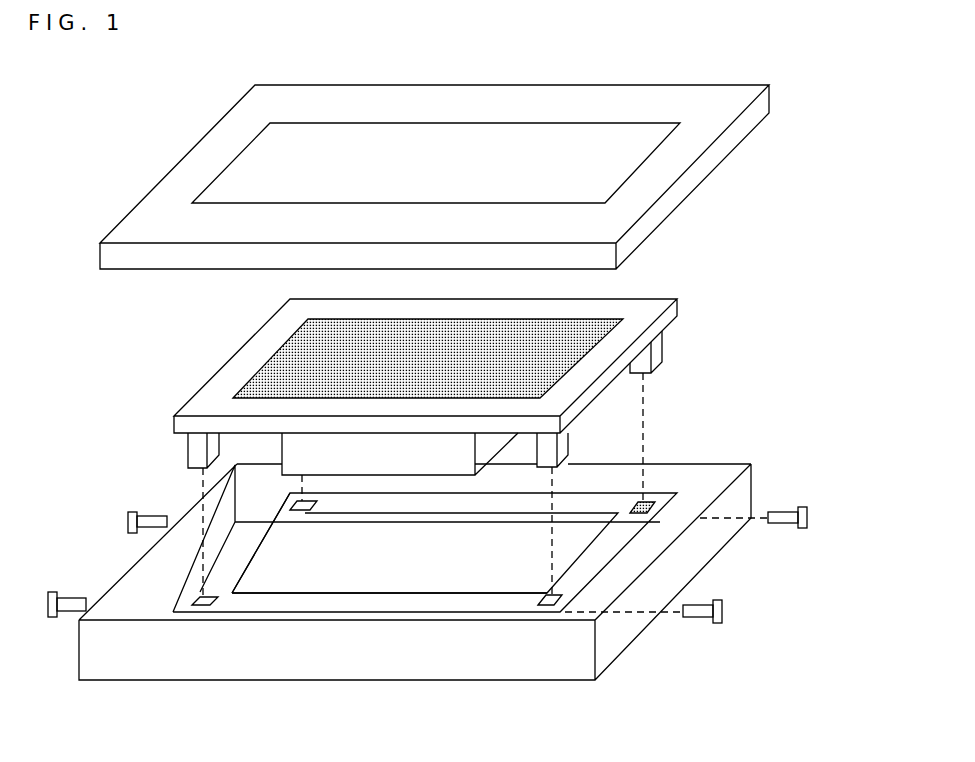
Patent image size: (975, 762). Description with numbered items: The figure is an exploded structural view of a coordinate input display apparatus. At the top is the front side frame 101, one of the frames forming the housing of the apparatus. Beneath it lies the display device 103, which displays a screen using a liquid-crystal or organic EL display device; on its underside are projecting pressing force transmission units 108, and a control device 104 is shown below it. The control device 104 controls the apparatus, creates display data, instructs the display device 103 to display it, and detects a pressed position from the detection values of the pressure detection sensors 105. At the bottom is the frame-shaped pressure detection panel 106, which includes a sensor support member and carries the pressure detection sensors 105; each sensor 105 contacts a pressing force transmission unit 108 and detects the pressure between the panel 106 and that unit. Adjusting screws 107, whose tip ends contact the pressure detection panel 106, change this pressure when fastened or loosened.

The front side frame 101 is at (717, 165).
The display device 103 is at (638, 290).
The control device 104 is at (358, 465).
The pressure detection sensor 105 is at (648, 500).
The pressure detection panel 106 is at (360, 585).
The adjusting screw 107 is at (150, 512).
The pressing force transmission unit 108 is at (660, 345).